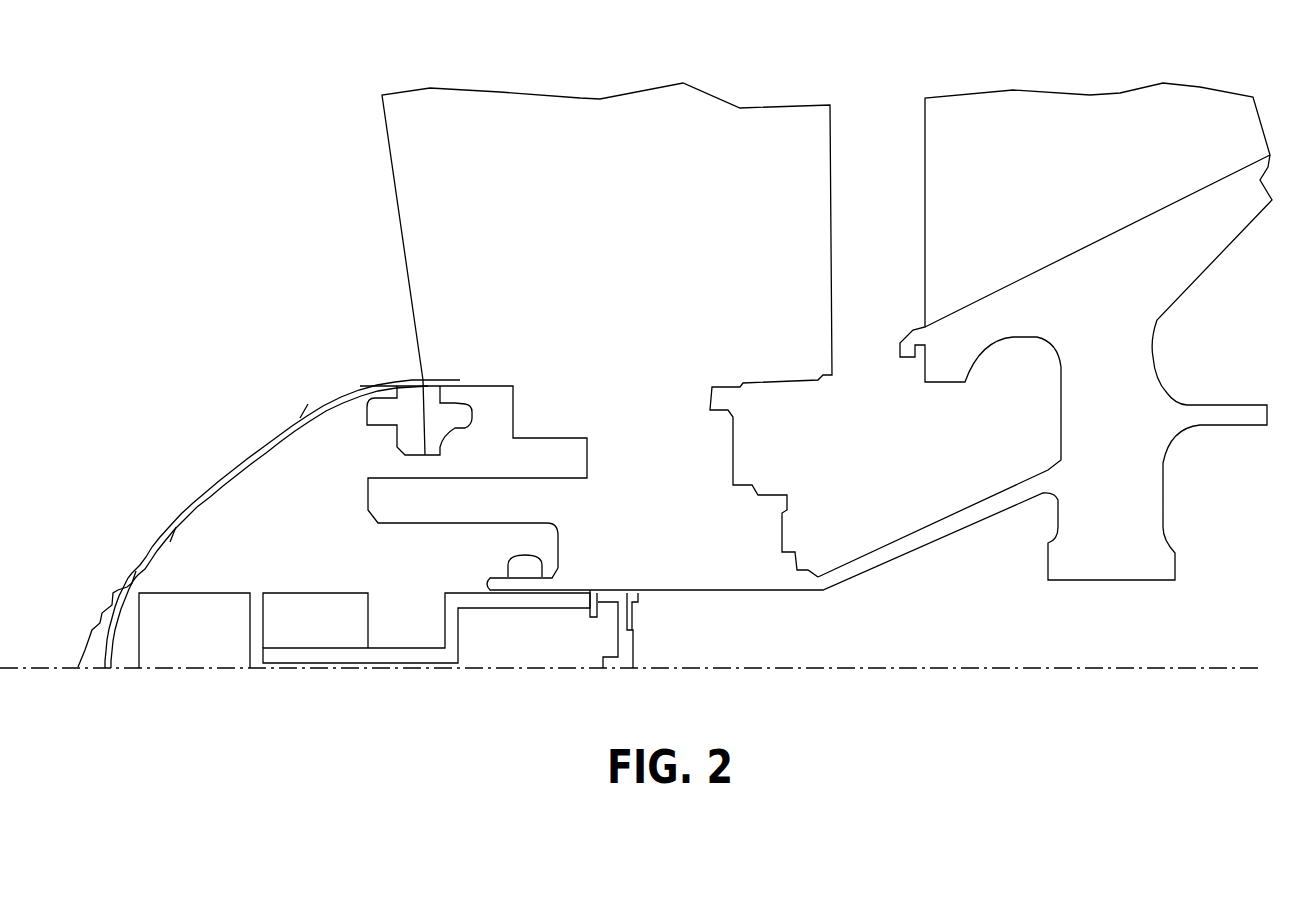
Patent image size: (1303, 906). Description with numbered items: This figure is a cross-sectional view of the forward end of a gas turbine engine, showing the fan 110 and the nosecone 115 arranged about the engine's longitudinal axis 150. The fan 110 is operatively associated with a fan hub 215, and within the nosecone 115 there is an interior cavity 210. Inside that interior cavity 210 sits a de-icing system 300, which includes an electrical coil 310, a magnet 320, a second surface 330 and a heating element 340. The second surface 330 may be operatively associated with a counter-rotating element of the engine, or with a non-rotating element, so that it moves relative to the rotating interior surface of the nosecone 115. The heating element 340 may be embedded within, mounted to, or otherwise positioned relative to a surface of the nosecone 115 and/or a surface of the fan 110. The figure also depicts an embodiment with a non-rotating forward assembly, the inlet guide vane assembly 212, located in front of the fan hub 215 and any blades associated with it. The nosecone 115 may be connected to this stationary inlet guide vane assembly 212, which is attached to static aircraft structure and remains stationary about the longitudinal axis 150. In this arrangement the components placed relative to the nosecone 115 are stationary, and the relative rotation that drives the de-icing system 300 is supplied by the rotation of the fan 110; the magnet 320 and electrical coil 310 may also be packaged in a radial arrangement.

The fan 110 is at (248, 174).
The nosecone 115 is at (242, 455).
The longitudinal axis 150 is at (1067, 676).
The interior cavity 210 is at (323, 492).
The inlet guide vane assembly 212 is at (577, 95).
The fan hub 215 is at (1112, 344).
The de-icing system 300 is at (259, 579).
The electrical coil 310 is at (186, 648).
The magnet 320 is at (321, 633).
The second surface 330 is at (461, 671).
The heating element 340 is at (217, 504).